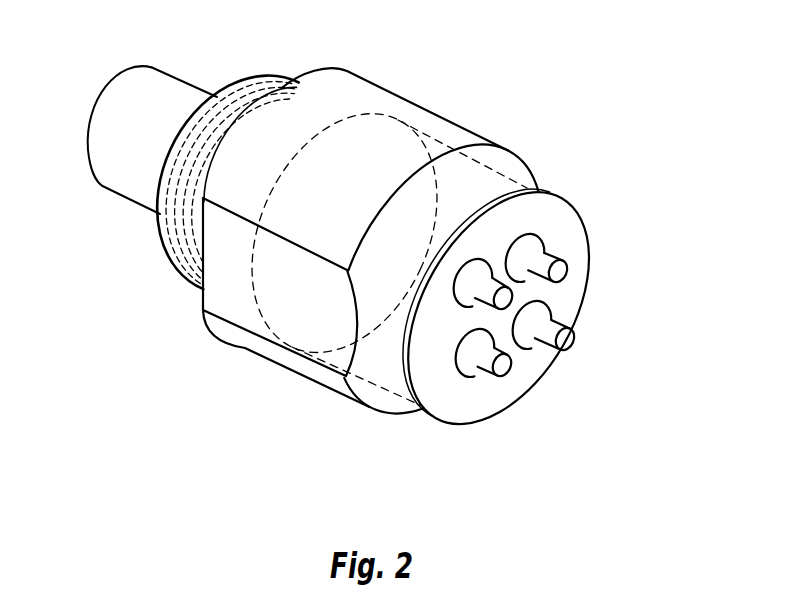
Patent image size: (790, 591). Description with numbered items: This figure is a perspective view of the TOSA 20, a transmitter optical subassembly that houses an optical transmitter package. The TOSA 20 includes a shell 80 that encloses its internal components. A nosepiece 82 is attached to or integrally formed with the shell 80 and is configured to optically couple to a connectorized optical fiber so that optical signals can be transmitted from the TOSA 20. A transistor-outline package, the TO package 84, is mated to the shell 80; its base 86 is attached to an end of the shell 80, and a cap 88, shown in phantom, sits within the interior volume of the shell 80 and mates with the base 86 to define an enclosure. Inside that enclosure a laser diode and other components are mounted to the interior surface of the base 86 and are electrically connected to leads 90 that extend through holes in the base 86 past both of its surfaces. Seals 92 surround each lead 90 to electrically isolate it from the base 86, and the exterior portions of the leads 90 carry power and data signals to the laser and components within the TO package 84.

The TOSA 20 is at (294, 472).
The shell 80 is at (378, 100).
The nosepiece 82 is at (192, 82).
The TO package 84 is at (545, 212).
The base 86 is at (433, 333).
The cap 88 is at (477, 130).
The leads 90 is at (546, 362).
The seals 92 is at (462, 280).